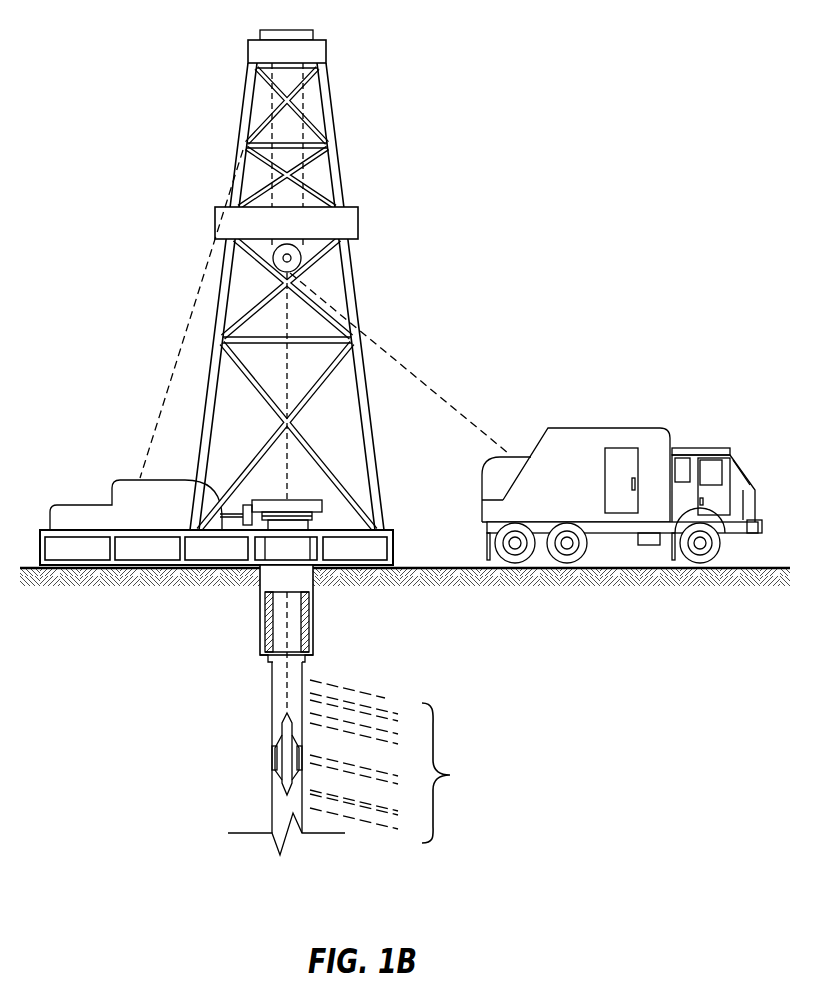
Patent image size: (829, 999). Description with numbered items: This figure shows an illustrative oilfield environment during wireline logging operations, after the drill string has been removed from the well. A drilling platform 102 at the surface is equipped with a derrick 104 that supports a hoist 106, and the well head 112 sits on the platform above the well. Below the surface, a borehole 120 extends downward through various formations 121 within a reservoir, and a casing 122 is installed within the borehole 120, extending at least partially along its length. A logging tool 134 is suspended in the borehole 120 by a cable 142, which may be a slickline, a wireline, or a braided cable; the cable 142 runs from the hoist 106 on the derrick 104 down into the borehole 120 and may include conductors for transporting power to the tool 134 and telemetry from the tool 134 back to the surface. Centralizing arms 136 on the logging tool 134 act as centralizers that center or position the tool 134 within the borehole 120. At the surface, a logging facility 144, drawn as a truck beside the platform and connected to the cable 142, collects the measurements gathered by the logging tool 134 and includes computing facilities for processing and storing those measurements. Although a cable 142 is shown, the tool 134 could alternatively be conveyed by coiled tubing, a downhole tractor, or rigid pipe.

The drilling platform 102 is at (393, 548).
The derrick 104 is at (373, 444).
The hoist 106 is at (295, 249).
The well head 112 is at (322, 505).
The borehole 120 is at (272, 672).
The formations 121 is at (409, 761).
The casing 122 is at (260, 607).
The logging tool 134 is at (284, 733).
The centralizing arms 136 is at (273, 762).
The cable 142 is at (372, 347).
The logging facility 144 is at (592, 428).